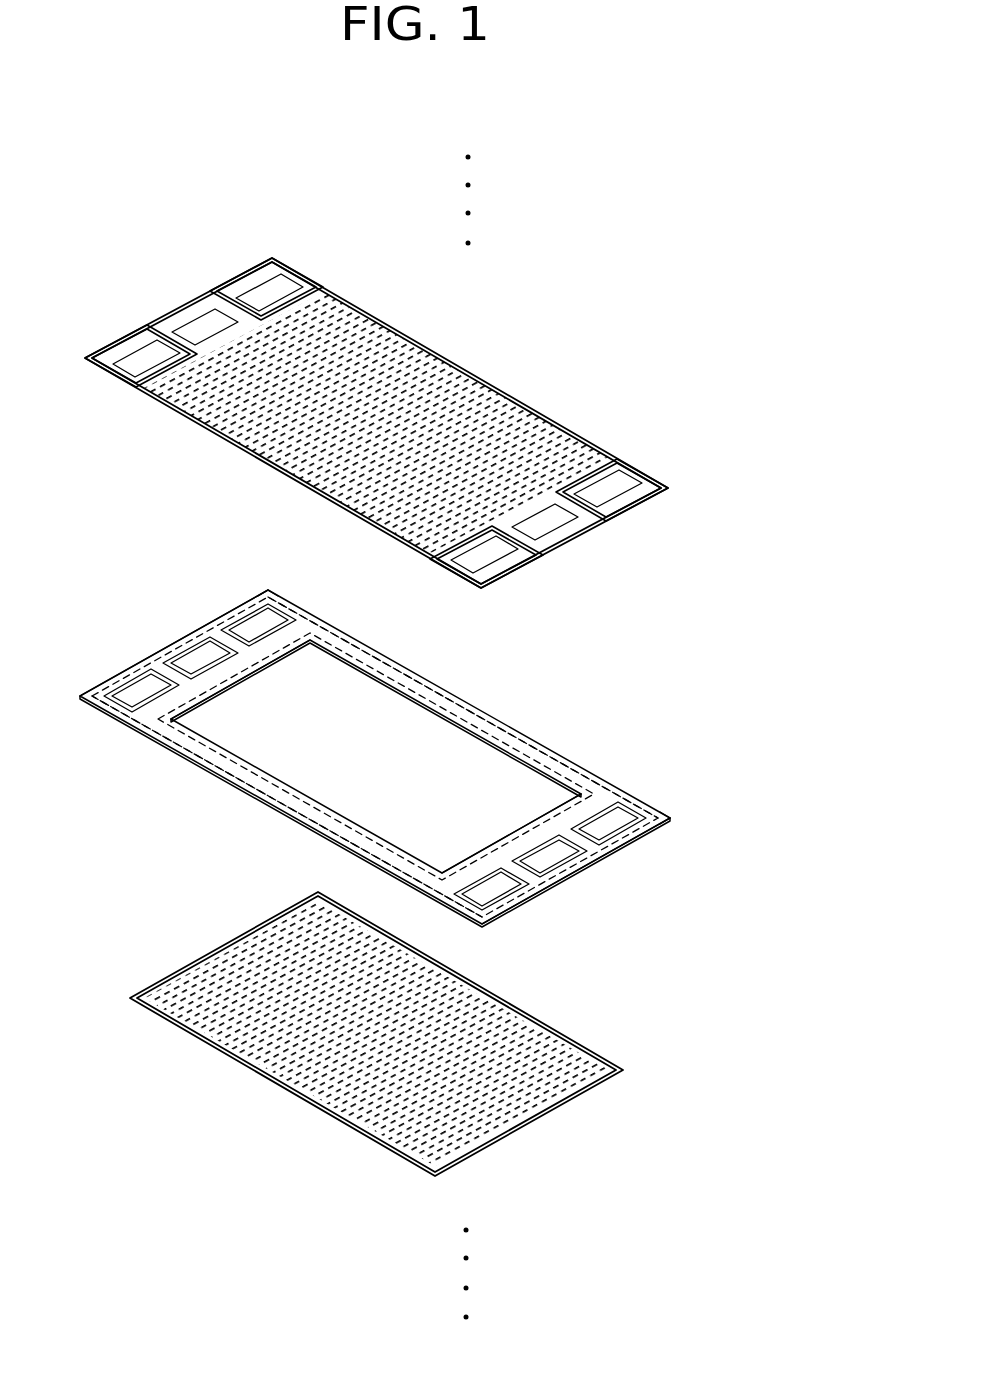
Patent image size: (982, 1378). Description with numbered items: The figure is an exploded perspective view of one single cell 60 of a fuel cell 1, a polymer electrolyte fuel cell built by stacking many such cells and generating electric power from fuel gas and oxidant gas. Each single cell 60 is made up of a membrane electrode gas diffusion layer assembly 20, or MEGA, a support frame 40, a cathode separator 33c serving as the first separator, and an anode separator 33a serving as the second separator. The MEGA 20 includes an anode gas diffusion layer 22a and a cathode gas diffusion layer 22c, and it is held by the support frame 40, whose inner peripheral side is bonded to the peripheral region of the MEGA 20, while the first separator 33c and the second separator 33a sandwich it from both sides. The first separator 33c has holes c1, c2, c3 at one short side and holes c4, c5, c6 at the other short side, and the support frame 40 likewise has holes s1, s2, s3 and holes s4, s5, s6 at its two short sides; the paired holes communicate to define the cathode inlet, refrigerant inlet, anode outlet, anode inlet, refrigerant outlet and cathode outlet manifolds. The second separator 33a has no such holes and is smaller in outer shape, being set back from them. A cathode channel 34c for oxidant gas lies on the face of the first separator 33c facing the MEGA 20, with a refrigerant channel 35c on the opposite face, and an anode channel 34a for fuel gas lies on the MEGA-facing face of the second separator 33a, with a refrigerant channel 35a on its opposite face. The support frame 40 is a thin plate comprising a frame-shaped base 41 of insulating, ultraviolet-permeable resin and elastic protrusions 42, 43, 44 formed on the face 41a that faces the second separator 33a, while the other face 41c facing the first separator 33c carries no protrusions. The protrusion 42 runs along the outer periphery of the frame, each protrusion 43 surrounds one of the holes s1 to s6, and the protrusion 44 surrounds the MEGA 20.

The fuel cell 1 is at (695, 281).
The single cell 60 is at (742, 426).
The cathode separator 33c is at (133, 318).
The cathode channel 34c is at (167, 412).
The refrigerant channel 35c is at (362, 337).
The hole c1 is at (258, 292).
The hole c2 is at (198, 322).
The hole c3 is at (140, 357).
The hole c4 is at (617, 493).
The hole c5 is at (578, 535).
The hole c6 is at (525, 573).
The support frame 40 is at (687, 815).
The base 41 is at (605, 782).
The face 41a is at (302, 824).
The face 41c is at (395, 670).
The protrusion 42 is at (234, 772).
The protrusion 43 is at (270, 588).
The protrusion 44 is at (470, 727).
The membrane electrode gas diffusion layer assembly 20 is at (222, 708).
The anode gas diffusion layer 22a is at (550, 897).
The cathode gas diffusion layer 22c is at (170, 690).
The hole s1 is at (260, 630).
The hole s2 is at (200, 657).
The hole s3 is at (140, 691).
The hole s4 is at (613, 825).
The hole s5 is at (552, 858).
The hole s6 is at (493, 897).
The anode separator 33a is at (169, 962).
The anode channel 34a is at (357, 1055).
The refrigerant channel 35a is at (390, 1138).